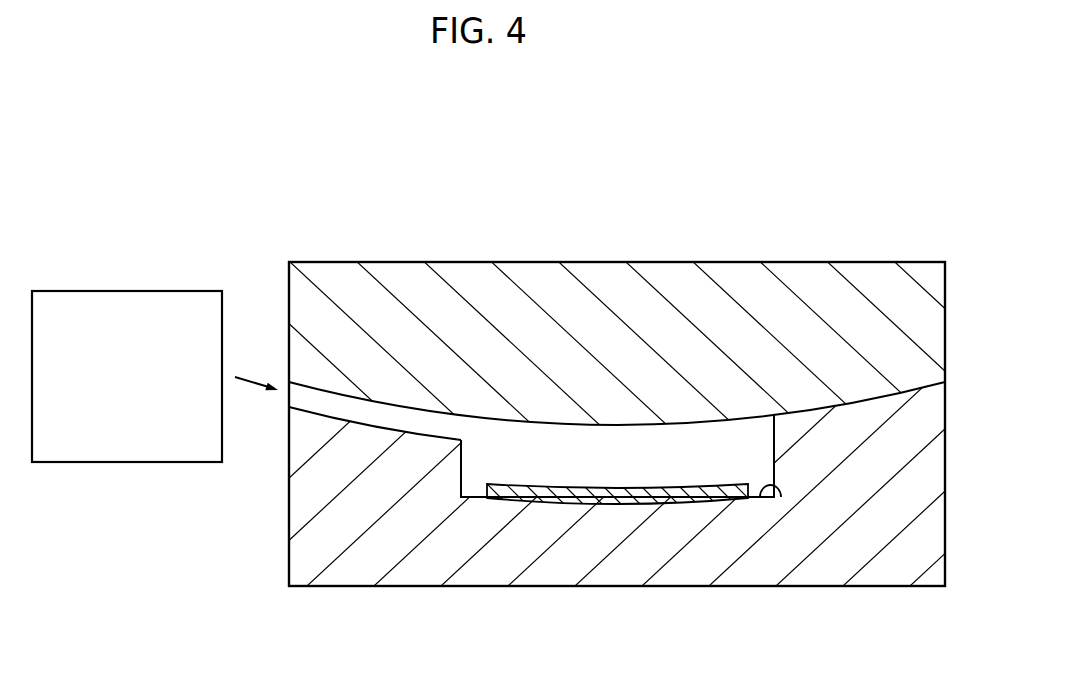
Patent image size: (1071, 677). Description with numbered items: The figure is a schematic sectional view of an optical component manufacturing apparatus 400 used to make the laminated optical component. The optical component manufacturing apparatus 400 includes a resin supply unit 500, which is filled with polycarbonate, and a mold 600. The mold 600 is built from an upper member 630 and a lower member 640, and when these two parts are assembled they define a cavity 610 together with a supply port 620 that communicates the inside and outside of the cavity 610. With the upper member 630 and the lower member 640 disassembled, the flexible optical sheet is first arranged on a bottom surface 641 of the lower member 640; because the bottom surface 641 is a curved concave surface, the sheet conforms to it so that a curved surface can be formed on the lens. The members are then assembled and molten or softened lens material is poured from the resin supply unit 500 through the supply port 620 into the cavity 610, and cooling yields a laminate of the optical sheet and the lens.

The optical component manufacturing apparatus 400 is at (462, 149).
The resin supply unit 500 is at (132, 291).
The mold 600 is at (871, 252).
The cavity 610 is at (618, 467).
The supply port 620 is at (292, 397).
The upper member 630 is at (668, 272).
The lower member 640 is at (893, 575).
The bottom surface 641 is at (777, 492).